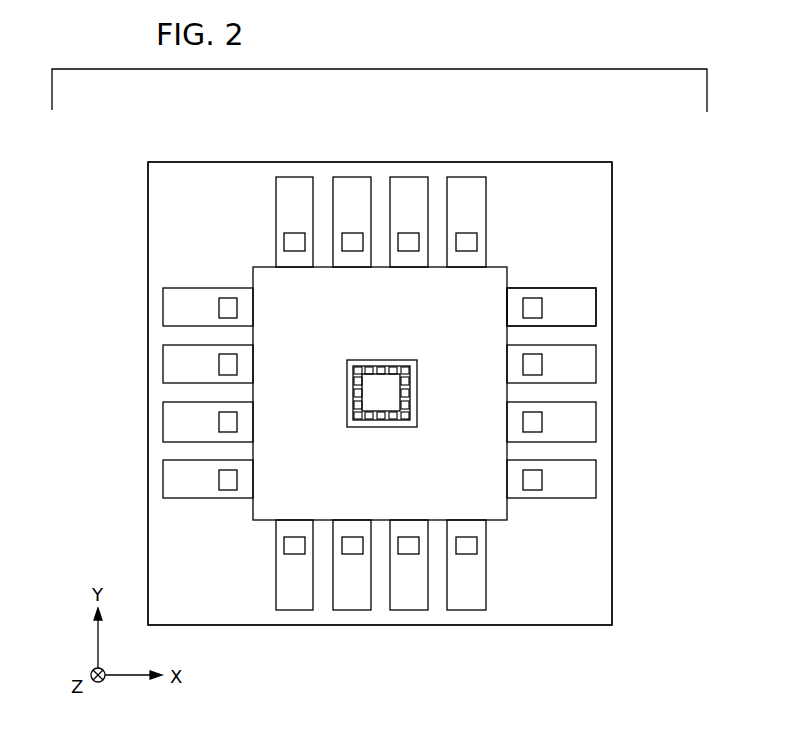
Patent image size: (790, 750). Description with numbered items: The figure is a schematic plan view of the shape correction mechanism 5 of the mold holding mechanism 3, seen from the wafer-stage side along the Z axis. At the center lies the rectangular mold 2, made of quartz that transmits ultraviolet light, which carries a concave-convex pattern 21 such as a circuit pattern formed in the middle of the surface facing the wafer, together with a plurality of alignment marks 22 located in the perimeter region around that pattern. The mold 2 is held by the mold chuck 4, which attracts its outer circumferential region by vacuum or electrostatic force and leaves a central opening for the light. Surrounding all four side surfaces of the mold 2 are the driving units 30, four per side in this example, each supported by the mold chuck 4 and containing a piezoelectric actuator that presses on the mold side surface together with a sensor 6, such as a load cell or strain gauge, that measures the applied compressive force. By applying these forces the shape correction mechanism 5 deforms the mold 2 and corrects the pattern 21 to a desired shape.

The mold 2 is at (508, 513).
The mold holding mechanism 3 is at (566, 137).
The mold chuck 4 is at (612, 222).
The shape correction mechanism 5 is at (584, 273).
The sensor 6 is at (542, 306).
The concave-convex pattern 21 is at (382, 392).
The alignment marks 22 is at (408, 417).
The driving unit 30 is at (585, 303).